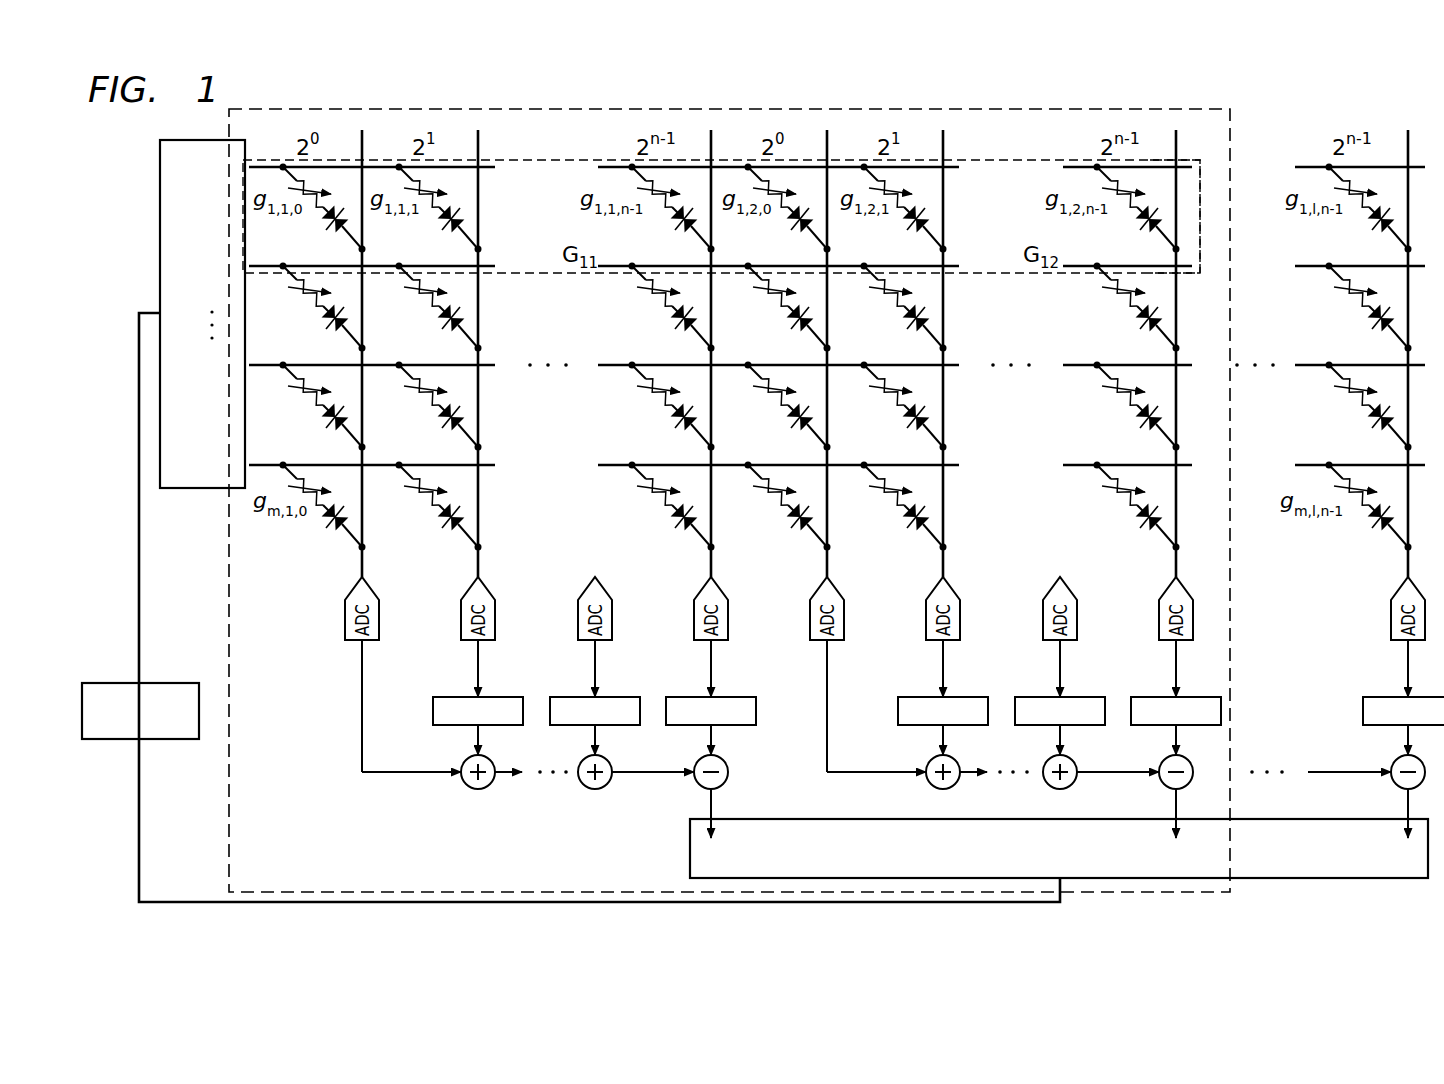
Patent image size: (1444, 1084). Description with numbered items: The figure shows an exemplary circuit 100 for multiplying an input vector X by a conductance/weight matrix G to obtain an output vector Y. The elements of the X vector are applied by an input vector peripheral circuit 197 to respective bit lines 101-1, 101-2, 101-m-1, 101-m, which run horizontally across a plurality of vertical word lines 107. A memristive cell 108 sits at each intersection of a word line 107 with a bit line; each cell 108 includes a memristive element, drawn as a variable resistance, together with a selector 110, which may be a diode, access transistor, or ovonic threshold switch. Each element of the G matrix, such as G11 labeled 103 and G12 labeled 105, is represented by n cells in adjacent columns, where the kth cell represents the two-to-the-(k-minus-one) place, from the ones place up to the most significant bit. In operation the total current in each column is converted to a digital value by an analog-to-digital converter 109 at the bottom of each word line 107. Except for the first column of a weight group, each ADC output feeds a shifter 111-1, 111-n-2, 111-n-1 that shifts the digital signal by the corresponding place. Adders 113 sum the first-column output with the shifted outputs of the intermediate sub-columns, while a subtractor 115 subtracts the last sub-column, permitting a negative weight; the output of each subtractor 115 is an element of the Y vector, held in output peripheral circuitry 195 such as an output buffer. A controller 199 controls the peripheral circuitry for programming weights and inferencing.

The circuit 100 is at (1268, 115).
The bit line 101-1 is at (263, 166).
The bit line 101-2 is at (270, 265).
The bit line 101-m-1 is at (342, 365).
The bit line 101-m is at (316, 465).
The conductance/weight matrix element G11 103 is at (522, 158).
The conductance/weight matrix element G12 105 is at (1008, 160).
The word lines 107 is at (364, 132).
The memristive cell 108 is at (305, 532).
The analog-to-digital converter 109 is at (345, 621).
The selector 110 is at (1356, 528).
The shifter 111-1 is at (465, 697).
The shifter 111-n-2 is at (590, 697).
The shifter 111-n-1 is at (706, 697).
The adder 113 is at (468, 786).
The subtractor 115 is at (701, 786).
The peripheral circuitry 195 is at (690, 845).
The input vector peripheral circuit 197 is at (160, 206).
The controller 199 is at (164, 683).